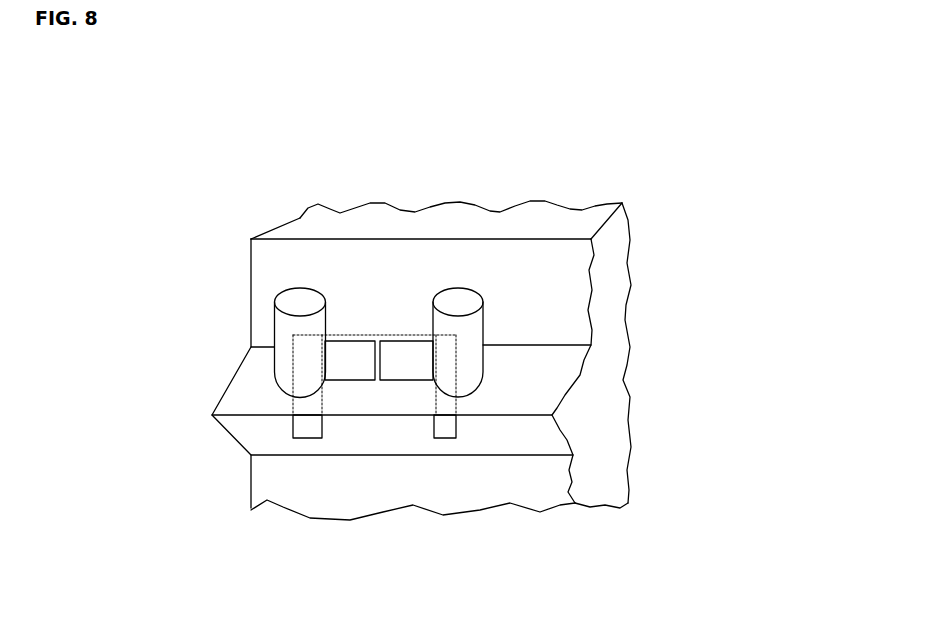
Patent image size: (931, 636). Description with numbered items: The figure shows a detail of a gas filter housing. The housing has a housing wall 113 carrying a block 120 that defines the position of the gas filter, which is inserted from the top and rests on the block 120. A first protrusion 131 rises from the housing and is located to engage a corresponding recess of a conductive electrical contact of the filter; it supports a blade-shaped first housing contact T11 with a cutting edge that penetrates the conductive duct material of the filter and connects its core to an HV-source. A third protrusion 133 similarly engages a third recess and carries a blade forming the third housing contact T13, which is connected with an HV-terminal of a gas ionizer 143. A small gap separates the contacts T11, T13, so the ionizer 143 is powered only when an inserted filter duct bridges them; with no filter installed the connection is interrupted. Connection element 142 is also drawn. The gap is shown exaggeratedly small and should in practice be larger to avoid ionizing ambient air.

The housing wall 113 is at (608, 298).
The block 120 is at (542, 388).
The first protrusion 131 is at (293, 327).
The third protrusion 133 is at (473, 320).
The first housing contact T11 is at (337, 357).
The third housing contact T13 is at (376, 357).
The second conductive via 142 is at (305, 434).
The gas ionizer 143 is at (450, 430).